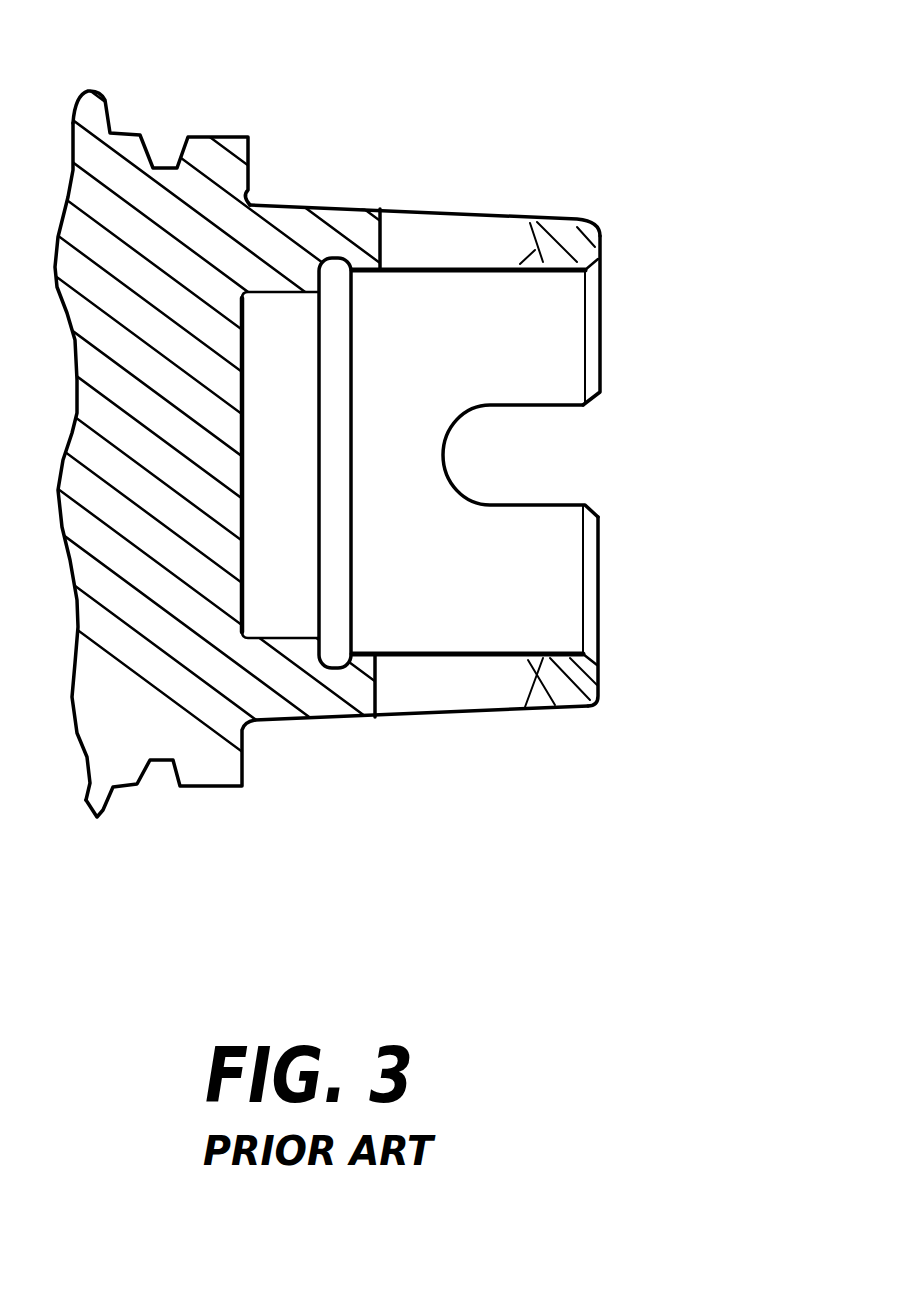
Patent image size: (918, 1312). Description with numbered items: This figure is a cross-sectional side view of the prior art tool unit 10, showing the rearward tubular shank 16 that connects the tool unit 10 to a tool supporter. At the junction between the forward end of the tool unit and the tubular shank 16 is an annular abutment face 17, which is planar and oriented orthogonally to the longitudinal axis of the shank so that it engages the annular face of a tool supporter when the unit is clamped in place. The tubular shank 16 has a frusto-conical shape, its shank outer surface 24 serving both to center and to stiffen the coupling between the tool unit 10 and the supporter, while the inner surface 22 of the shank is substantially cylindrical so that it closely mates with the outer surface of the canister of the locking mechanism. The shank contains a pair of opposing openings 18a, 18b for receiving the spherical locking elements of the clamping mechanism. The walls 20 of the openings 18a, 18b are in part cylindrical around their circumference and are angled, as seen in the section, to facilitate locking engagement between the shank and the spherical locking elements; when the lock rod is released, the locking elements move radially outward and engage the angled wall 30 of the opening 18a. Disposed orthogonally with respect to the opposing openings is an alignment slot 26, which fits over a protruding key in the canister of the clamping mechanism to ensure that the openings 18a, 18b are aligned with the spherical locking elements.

The tool unit 10 is at (658, 229).
The tubular shank 16 is at (587, 213).
The annular abutment face 17 is at (243, 765).
The opening 18a is at (490, 713).
The opening 18b is at (487, 210).
The walls of the openings 20 is at (418, 207).
The inner surface 22 is at (430, 487).
The shank outer surface 24 is at (293, 202).
The alignment slot 26 is at (547, 495).
The angled wall 30 is at (515, 278).